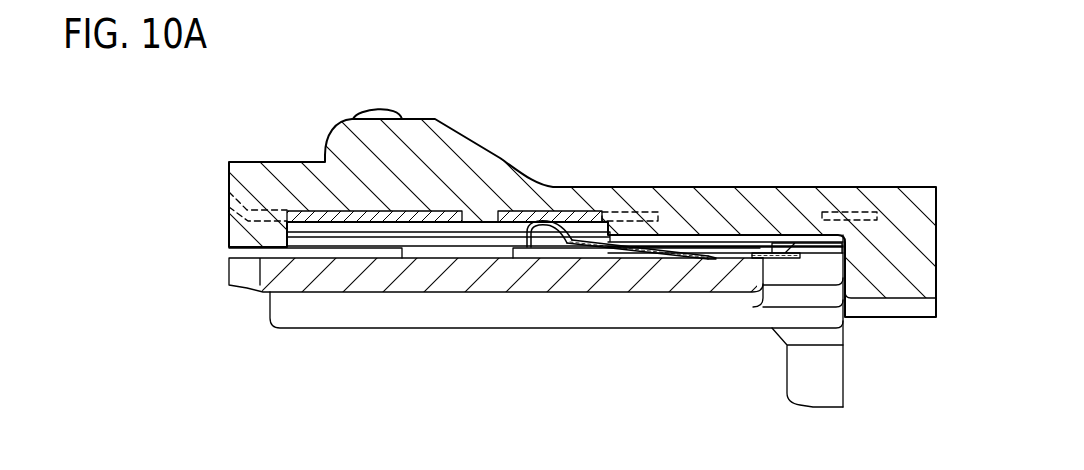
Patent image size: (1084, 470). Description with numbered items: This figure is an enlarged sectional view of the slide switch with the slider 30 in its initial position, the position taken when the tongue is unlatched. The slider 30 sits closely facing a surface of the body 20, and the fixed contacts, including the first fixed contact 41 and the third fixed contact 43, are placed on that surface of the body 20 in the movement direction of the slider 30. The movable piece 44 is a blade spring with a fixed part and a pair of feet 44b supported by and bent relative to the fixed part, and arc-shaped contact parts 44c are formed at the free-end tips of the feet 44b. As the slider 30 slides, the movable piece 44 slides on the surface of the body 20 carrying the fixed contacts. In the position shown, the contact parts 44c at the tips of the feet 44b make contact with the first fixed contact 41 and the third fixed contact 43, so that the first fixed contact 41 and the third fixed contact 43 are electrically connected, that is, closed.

The body 20 is at (277, 162).
The slider 30 is at (380, 328).
The first fixed contact 41 is at (665, 249).
The third fixed contact 43 is at (598, 249).
The movable piece 44 is at (698, 257).
The feet 44b is at (636, 256).
The contact parts 44c is at (522, 225).